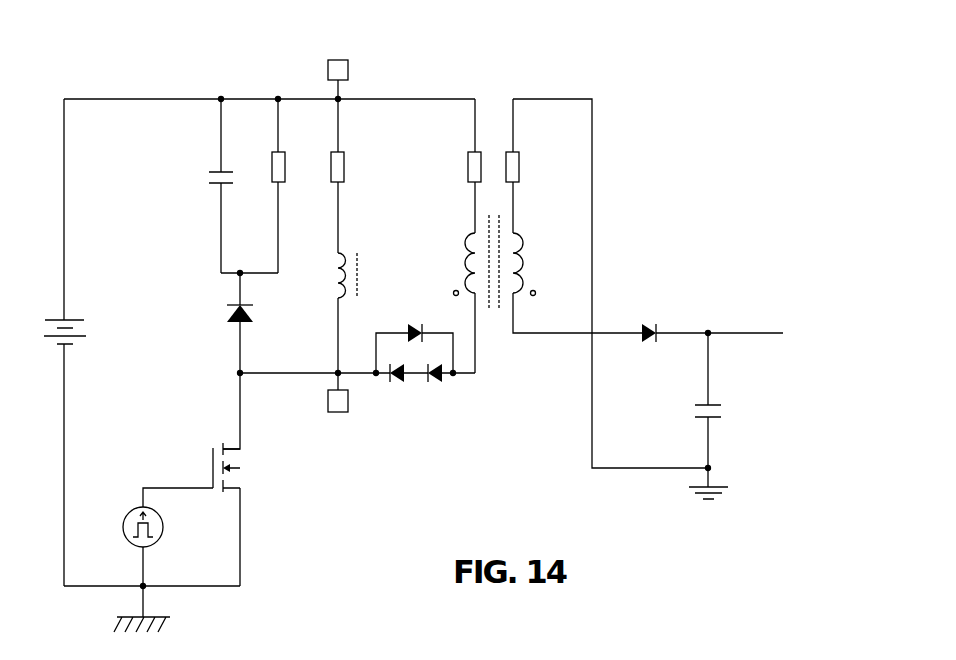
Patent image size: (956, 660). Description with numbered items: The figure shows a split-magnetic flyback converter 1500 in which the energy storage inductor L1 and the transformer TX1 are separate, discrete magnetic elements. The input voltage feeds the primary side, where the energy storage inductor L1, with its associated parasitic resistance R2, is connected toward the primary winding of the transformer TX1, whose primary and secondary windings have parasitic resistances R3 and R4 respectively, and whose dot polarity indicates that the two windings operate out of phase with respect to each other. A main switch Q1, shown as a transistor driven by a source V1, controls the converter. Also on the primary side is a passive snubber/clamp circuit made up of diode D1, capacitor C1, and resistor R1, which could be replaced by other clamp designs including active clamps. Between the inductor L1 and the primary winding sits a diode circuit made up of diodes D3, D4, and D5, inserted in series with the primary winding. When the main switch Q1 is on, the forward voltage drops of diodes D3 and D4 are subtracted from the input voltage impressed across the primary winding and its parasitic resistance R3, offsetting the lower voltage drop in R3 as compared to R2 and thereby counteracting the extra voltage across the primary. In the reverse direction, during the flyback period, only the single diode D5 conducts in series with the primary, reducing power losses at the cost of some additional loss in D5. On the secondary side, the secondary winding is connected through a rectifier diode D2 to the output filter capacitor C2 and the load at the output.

The split-magnetic flyback converter 1500 is at (704, 118).
The capacitor C1 is at (230, 186).
The output filter capacitor C2 is at (720, 400).
The resistor R1 is at (288, 186).
The parasitic resistance R2 is at (348, 166).
The parasitic resistance R3 is at (464, 166).
The parasitic resistance R4 is at (522, 166).
The diode D1 is at (228, 361).
The rectifier diode D2 is at (648, 323).
The diode D3 is at (397, 385).
The diode D4 is at (435, 385).
The diode D5 is at (414, 338).
The energy storage inductor L1 is at (355, 267).
The transformer TX1 is at (490, 280).
The pulse voltage source V1 is at (154, 537).
The main switch Q1 is at (224, 514).